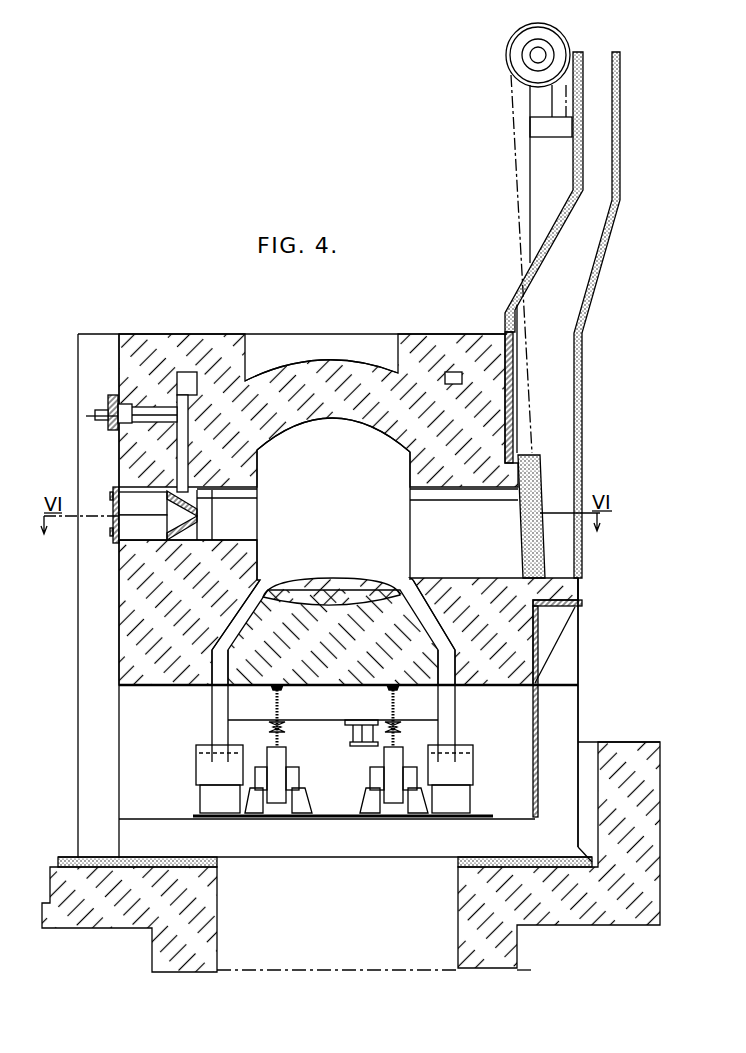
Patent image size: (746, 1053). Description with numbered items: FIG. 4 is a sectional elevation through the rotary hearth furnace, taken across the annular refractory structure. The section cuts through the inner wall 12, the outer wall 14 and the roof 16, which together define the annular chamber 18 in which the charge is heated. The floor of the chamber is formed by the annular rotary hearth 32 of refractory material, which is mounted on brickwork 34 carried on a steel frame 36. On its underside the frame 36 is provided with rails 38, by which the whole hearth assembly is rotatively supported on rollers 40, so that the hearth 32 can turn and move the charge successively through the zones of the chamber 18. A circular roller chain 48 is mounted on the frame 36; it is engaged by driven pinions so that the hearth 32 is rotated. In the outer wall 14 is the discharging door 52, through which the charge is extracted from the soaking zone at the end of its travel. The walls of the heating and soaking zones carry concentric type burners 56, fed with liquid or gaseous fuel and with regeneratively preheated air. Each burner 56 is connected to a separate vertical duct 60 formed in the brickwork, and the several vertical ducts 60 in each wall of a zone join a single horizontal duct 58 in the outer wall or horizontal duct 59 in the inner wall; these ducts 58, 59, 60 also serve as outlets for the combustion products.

The inner wall 12 is at (137, 587).
The outer wall 14 is at (507, 462).
The roof 16 is at (322, 378).
The annular chamber 18 is at (346, 504).
The annular rotary hearth 32 is at (347, 561).
The brickwork 34 is at (344, 660).
The steel frame 36 is at (348, 713).
The rails 38 is at (281, 745).
The rollers 40 is at (387, 757).
The circular roller chain 48 is at (359, 731).
The discharging door 52 is at (545, 560).
The concentric type burner 56 is at (122, 544).
The horizontal duct 58 is at (452, 372).
The horizontal duct 59 is at (188, 382).
The vertical duct 60 is at (180, 458).